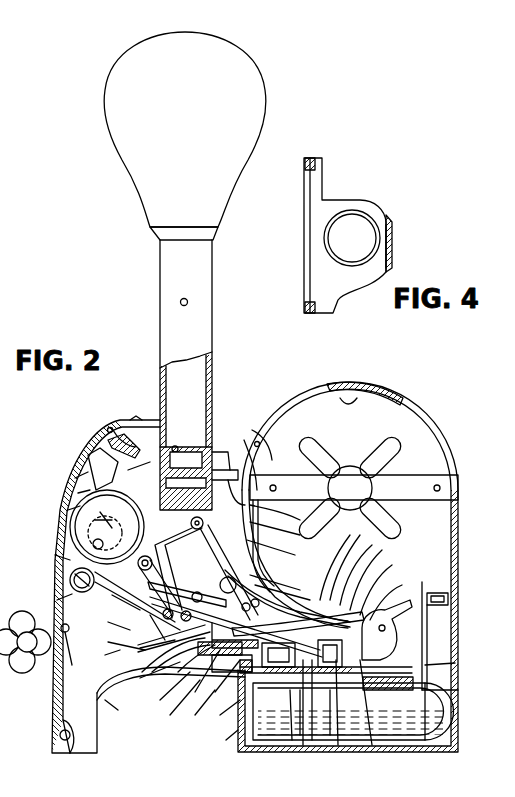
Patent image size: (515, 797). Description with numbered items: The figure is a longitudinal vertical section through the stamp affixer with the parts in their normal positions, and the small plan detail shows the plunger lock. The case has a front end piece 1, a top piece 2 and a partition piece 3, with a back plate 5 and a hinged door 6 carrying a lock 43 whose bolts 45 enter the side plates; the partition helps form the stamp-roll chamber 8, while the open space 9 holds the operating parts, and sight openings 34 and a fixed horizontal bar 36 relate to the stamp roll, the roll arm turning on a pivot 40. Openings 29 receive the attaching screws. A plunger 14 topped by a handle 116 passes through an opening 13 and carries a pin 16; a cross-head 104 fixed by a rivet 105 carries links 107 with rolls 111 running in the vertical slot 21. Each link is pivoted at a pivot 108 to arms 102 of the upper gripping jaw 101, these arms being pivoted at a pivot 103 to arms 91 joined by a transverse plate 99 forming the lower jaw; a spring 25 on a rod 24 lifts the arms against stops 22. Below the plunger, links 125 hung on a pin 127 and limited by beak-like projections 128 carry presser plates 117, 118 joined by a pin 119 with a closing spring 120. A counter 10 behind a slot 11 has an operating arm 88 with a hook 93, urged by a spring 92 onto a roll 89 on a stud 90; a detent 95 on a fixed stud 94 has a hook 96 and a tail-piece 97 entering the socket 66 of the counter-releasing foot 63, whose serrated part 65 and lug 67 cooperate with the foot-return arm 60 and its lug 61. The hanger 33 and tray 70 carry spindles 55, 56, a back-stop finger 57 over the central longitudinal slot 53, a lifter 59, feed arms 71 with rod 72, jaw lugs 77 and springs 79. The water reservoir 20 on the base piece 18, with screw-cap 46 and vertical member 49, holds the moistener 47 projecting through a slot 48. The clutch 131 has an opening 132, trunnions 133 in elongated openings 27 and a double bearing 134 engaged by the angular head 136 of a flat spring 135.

In FIG. 2, the handle 116 is at (185, 136).
In FIG. 2, the plunger 14 is at (212, 336).
In FIG. 2, the pin 16 is at (188, 302).
In FIG. 2, the door 6 is at (457, 541).
In FIG. 2, the stamp-roll chamber 8 is at (322, 410).
In FIG. 2, the sight openings 34 is at (342, 470).
In FIG. 2, the fixed horizontal bar 36 is at (354, 487).
In FIG. 2, the beak-like projections 128 is at (180, 410).
In FIG. 2, the front end piece 1 is at (58, 682).
In FIG. 2, the open space 9 is at (72, 697).
In FIG. 2, the openings 29 is at (70, 635).
In FIG. 2, the counter 10 is at (70, 533).
In FIG. 2, the hook 93 is at (112, 538).
In FIG. 2, the slot 11 is at (72, 510).
In FIG. 2, the operating arm 88 is at (78, 493).
In FIG. 2, the spring 92 is at (75, 478).
In FIG. 2, the clutch 131 is at (130, 470).
In FIG. 4, the clutch 131 is at (348, 235).
In FIG. 2, the hook 96 is at (55, 555).
In FIG. 2, the rod 24 is at (70, 580).
In FIG. 2, the spring 25 is at (57, 600).
In FIG. 2, the detent 95 is at (135, 470).
In FIG. 2, the opening 13 is at (133, 420).
In FIG. 2, the fixed stud 94 is at (113, 430).
In FIG. 2, the elongated opening 27 is at (112, 445).
In FIG. 2, the rivet 105 is at (186, 468).
In FIG. 2, the cross-head 104 is at (208, 444).
In FIG. 2, the double bearing 134 is at (215, 425).
In FIG. 4, the double bearing 134 is at (393, 242).
In FIG. 2, the top piece 2 is at (220, 445).
In FIG. 2, the angular head 136 is at (246, 425).
In FIG. 2, the rolls 111 is at (256, 432).
In FIG. 2, the stops 22 is at (198, 568).
In FIG. 2, the pin 127 is at (250, 512).
In FIG. 2, the links 125 is at (250, 528).
In FIG. 2, the flat spring 135 is at (247, 548).
In FIG. 2, the tail-piece 97 is at (330, 567).
In FIG. 2, the counter-releasing foot 63 is at (352, 573).
In FIG. 2, the lug 61 is at (366, 569).
In FIG. 2, the socket 66 is at (340, 557).
In FIG. 2, the lug 67 is at (376, 580).
In FIG. 2, the arms 71 is at (383, 595).
In FIG. 2, the partition piece 3 is at (262, 572).
In FIG. 2, the vertical slot 21 is at (285, 583).
In FIG. 2, the pivot 108 is at (287, 598).
In FIG. 2, the foot-return arm 60 is at (322, 626).
In FIG. 2, the spindle 55 is at (295, 631).
In FIG. 2, the presser plate 118 is at (160, 650).
In FIG. 2, the roll 89 is at (117, 600).
In FIG. 2, the stud 90 is at (107, 620).
In FIG. 2, the spring 120 is at (143, 625).
In FIG. 2, the presser plate 117 is at (113, 640).
In FIG. 2, the pin 119 is at (143, 640).
In FIG. 2, the pivot 103 is at (208, 614).
In FIG. 2, the back plate 5 is at (105, 655).
In FIG. 2, the links 107 is at (165, 659).
In FIG. 2, the arms 91 is at (201, 668).
In FIG. 2, the rod 72 is at (200, 679).
In FIG. 2, the slot 48 is at (223, 684).
In FIG. 2, the lugs 77 is at (120, 709).
In FIG. 2, the arms 102 is at (165, 695).
In FIG. 2, the upper gripping jaw 101 is at (175, 707).
In FIG. 2, the transverse plate 99 is at (197, 712).
In FIG. 2, the springs 79 is at (222, 717).
In FIG. 2, the moistener 47 is at (221, 742).
In FIG. 2, the pivot 40 is at (25, 642).
In FIG. 2, the bolts 45 is at (449, 598).
In FIG. 2, the tray 70 is at (462, 640).
In FIG. 2, the hanger 33 is at (400, 655).
In FIG. 2, the lock 43 is at (456, 658).
In FIG. 2, the screw-cap 46 is at (413, 683).
In FIG. 2, the vertical member 49 is at (256, 700).
In FIG. 2, the water reservoir 20 is at (314, 712).
In FIG. 2, the back-stop finger 57 is at (344, 712).
In FIG. 2, the central longitudinal slot 53 is at (292, 740).
In FIG. 2, the base piece 18 is at (312, 740).
In FIG. 2, the spindle 56 is at (303, 745).
In FIG. 2, the serrated part 65 is at (338, 745).
In FIG. 2, the lifter 59 is at (372, 745).
In FIG. 4, the opening 132 is at (352, 238).
In FIG. 4, the trunnions 133 is at (312, 158).